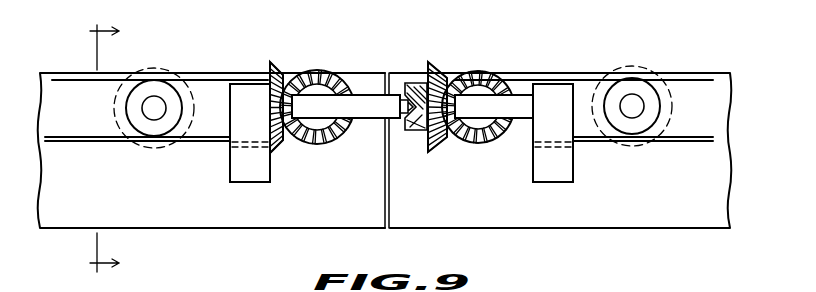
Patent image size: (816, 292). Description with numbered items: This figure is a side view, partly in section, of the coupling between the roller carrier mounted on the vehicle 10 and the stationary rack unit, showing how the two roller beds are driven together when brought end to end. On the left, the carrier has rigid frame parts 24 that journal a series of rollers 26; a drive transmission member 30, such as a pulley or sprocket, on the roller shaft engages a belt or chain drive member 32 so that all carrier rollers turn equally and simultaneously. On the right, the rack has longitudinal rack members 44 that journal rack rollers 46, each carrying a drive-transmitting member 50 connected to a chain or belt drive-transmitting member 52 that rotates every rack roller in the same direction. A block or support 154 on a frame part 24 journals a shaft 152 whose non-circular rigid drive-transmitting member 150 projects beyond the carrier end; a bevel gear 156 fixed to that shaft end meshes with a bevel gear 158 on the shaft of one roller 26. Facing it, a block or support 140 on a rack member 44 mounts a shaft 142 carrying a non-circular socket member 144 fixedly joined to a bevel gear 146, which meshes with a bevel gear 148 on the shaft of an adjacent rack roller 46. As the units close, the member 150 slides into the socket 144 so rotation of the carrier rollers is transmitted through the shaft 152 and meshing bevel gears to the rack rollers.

The vehicle 10 is at (91, 150).
The frame parts 24 is at (165, 210).
The rollers 26 is at (155, 70).
The drive transmission members 30 is at (152, 128).
The drive member 32 is at (90, 143).
The longitudinal rack members 44 is at (686, 212).
The rollers 46 is at (633, 67).
The drive-transmitting member 50 is at (633, 122).
The drive-transmitting member 52 is at (688, 132).
The block or support 140 is at (567, 172).
The shaft 142 is at (524, 97).
The non-circular socket member 144 is at (415, 82).
The bevel gear 146 is at (432, 70).
The bevel gear 148 is at (467, 155).
The non-circular rigid drive-transmitting member 150 is at (403, 128).
The shaft 152 is at (375, 118).
The block or support 154 is at (248, 162).
The bevel gear 156 is at (288, 36).
The bevel gear 158 is at (312, 68).